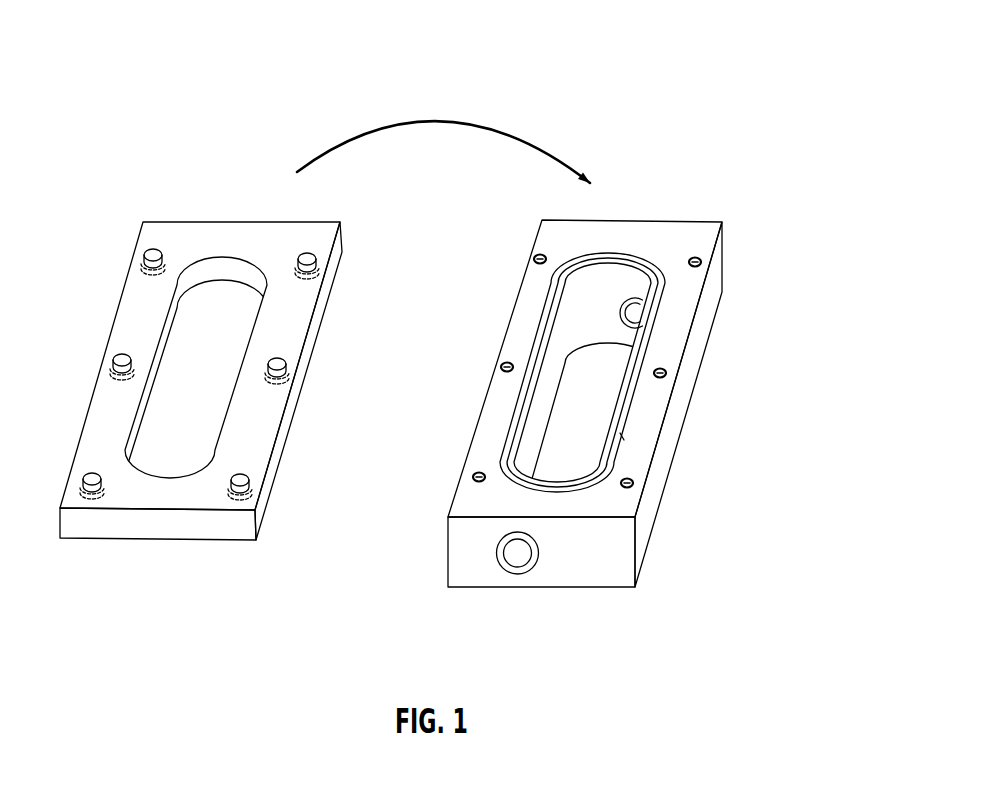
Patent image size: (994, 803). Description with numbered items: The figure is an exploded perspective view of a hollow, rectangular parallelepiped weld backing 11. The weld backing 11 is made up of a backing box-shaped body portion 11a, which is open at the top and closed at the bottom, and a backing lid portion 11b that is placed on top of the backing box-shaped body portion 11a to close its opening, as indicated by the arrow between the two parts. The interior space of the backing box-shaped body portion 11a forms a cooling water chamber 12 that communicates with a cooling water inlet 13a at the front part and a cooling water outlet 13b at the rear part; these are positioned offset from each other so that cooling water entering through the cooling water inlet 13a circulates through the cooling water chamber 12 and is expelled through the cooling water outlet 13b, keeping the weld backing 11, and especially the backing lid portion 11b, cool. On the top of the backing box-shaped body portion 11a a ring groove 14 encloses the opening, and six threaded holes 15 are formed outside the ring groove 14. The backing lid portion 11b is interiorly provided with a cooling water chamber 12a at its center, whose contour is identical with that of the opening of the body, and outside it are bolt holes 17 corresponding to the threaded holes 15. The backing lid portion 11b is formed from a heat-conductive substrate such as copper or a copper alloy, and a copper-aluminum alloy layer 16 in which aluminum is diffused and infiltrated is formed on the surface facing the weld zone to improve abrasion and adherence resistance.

The weld backing 11 is at (790, 78).
The backing box-shaped body portion 11a is at (728, 308).
The backing lid portion 11b is at (338, 331).
The cooling water chamber 12 is at (603, 278).
The cooling water chamber 12a is at (208, 295).
The cooling water inlet 13a is at (520, 565).
The cooling water outlet 13b is at (643, 297).
The ring groove 14 is at (620, 442).
The threaded holes 15 is at (536, 256).
The copper-aluminum alloy layer 16 is at (146, 543).
The bolt holes 17 is at (145, 255).